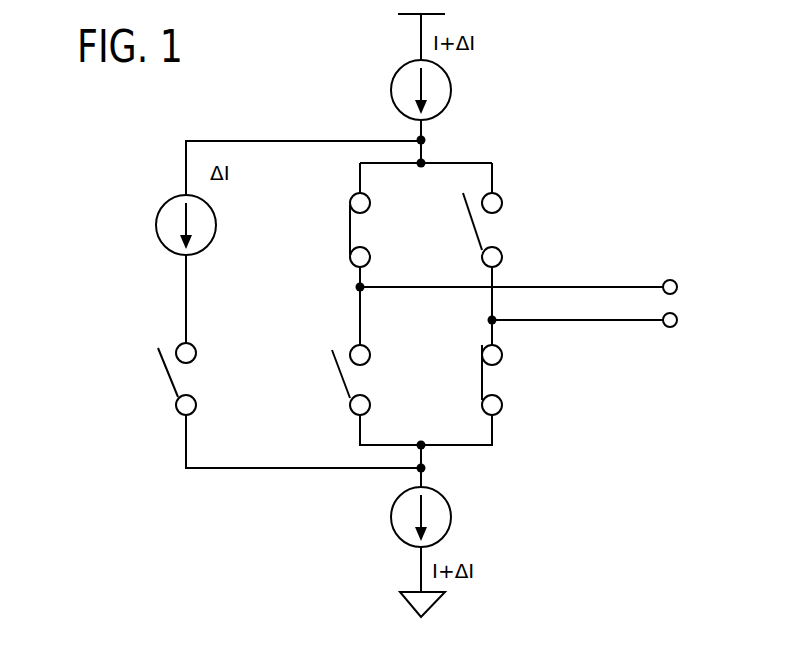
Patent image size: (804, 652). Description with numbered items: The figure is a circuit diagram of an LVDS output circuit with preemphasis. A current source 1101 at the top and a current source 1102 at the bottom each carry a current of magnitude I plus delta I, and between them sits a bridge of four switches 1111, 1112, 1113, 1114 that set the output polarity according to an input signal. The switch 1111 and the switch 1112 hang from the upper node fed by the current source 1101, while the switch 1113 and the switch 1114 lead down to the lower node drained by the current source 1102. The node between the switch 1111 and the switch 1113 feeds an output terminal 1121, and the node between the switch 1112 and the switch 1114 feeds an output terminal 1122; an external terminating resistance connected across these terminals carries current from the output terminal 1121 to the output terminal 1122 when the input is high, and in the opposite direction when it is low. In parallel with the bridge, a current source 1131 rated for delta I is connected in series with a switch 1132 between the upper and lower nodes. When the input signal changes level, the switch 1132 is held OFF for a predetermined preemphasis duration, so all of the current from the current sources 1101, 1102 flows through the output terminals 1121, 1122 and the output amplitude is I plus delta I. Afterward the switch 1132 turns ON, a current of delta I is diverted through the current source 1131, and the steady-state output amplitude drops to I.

The current source 1101 is at (451, 90).
The current source 1102 is at (451, 517).
The switch 1111 is at (370, 203).
The switch 1112 is at (502, 203).
The switch 1113 is at (370, 355).
The switch 1114 is at (502, 355).
The output terminal 1121 is at (677, 286).
The output terminal 1122 is at (677, 323).
The current source 1131 is at (156, 225).
The switch 1132 is at (164, 367).